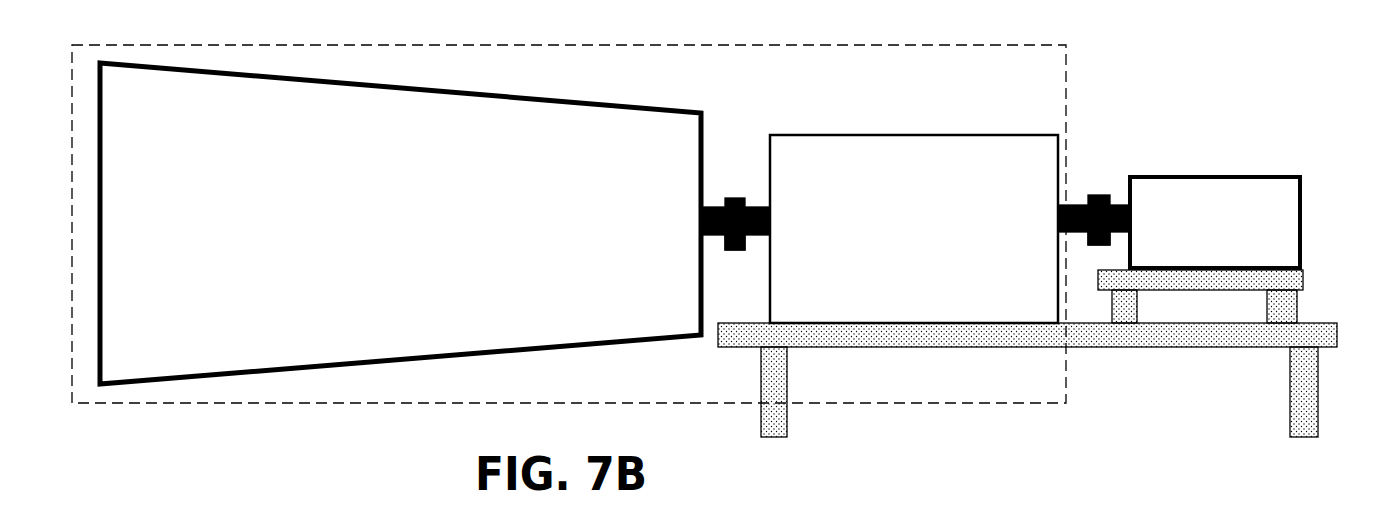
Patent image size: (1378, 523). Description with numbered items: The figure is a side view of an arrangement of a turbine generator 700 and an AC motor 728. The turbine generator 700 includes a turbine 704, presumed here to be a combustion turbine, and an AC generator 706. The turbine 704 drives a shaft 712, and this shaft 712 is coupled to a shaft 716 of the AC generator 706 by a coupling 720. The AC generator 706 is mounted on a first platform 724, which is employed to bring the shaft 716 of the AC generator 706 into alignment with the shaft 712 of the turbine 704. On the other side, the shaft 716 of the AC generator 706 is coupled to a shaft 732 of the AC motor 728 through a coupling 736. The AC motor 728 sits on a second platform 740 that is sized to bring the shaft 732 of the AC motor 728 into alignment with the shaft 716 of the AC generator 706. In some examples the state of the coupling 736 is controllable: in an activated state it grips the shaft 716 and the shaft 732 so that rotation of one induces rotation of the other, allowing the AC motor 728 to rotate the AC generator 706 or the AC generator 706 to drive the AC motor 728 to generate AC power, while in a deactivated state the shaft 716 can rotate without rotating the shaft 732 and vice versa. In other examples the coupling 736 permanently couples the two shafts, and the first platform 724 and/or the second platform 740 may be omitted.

The turbine generator 700 is at (702, 79).
The turbine 704 is at (467, 235).
The AC generator 706 is at (1015, 241).
The shaft 712 is at (713, 207).
The shaft 716 is at (757, 236).
The coupling 720 is at (733, 251).
The first platform 724 is at (960, 348).
The AC motor 728 is at (1231, 248).
The shaft 732 is at (1114, 200).
The coupling 736 is at (1088, 246).
The second platform 740 is at (1305, 283).